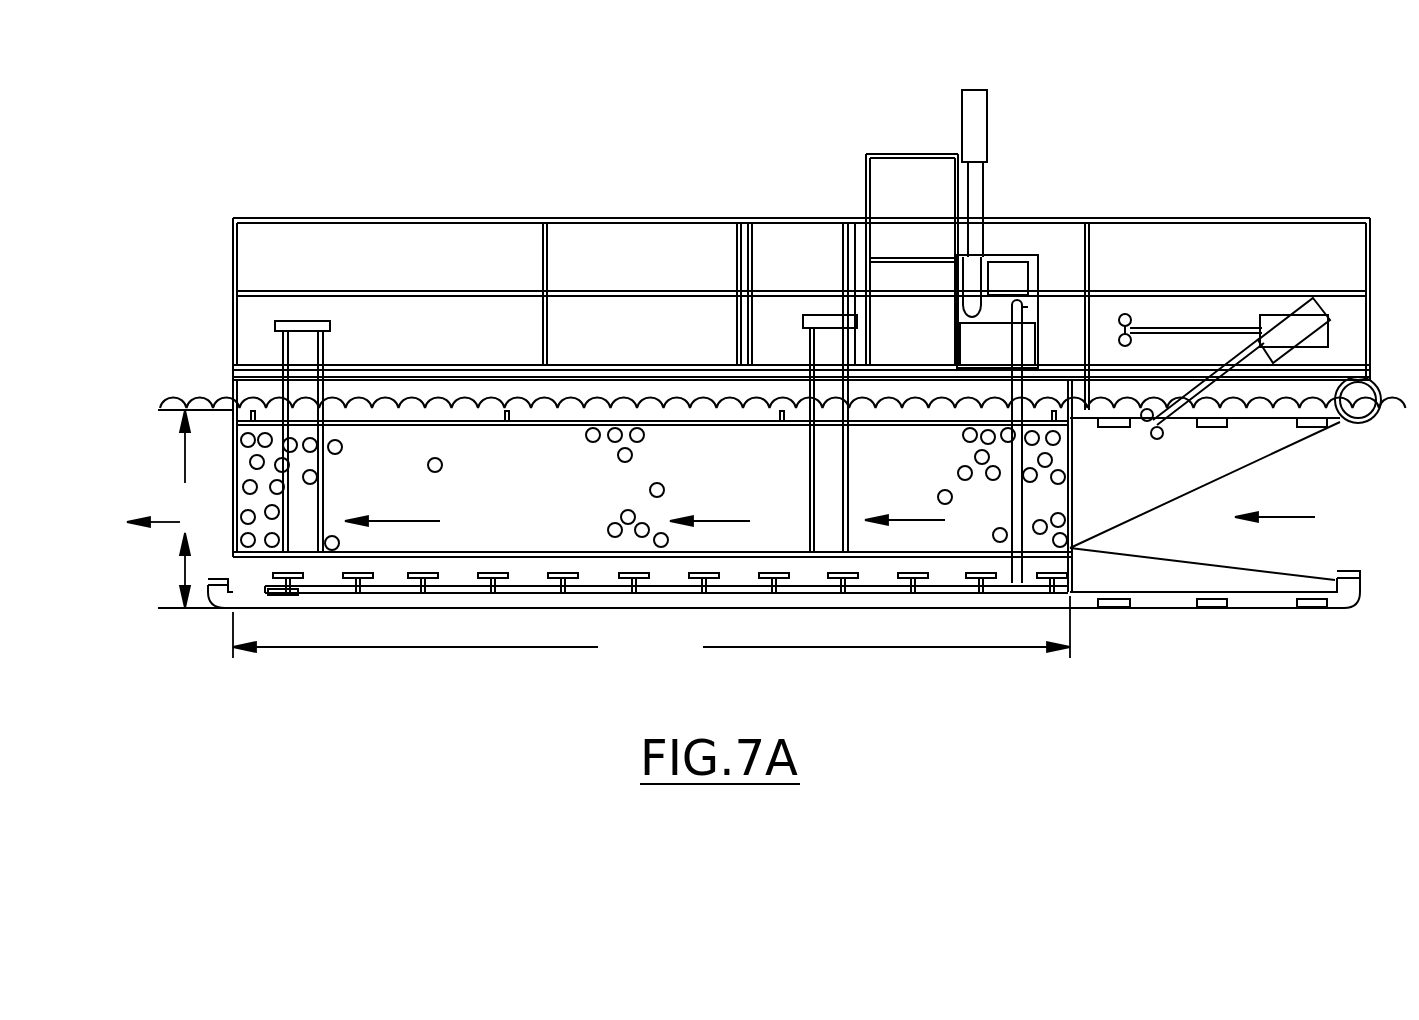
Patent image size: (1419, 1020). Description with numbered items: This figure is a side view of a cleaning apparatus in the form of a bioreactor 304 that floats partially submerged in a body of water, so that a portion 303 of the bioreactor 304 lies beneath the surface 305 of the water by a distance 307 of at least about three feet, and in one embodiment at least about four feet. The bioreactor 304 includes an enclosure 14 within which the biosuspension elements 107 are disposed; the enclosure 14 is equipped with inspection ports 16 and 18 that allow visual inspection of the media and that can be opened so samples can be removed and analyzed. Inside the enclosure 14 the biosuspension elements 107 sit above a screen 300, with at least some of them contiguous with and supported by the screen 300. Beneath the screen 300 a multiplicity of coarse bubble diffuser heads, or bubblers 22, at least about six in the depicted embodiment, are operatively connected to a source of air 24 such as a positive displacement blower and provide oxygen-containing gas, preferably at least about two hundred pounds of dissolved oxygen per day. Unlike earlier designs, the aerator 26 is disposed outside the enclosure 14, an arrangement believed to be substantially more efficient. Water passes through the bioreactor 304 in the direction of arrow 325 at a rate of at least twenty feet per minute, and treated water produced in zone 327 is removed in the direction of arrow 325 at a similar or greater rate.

The bioreactor 304 is at (1053, 177).
The source of air 24 is at (1006, 275).
The inspection port 16 is at (330, 326).
The inspection port 18 is at (803, 322).
The aerator 26 is at (1192, 333).
The enclosure 14 is at (483, 473).
The biosuspension elements 107 is at (666, 484).
The arrow 325 is at (172, 530).
The bubblers 22 is at (390, 580).
The screen 300 is at (492, 558).
The surface of the body of water 305 is at (208, 408).
The submerged portion of the bioreactor 303 is at (210, 474).
The submergence distance 307 is at (190, 536).
The treated water zone 327 is at (651, 628).